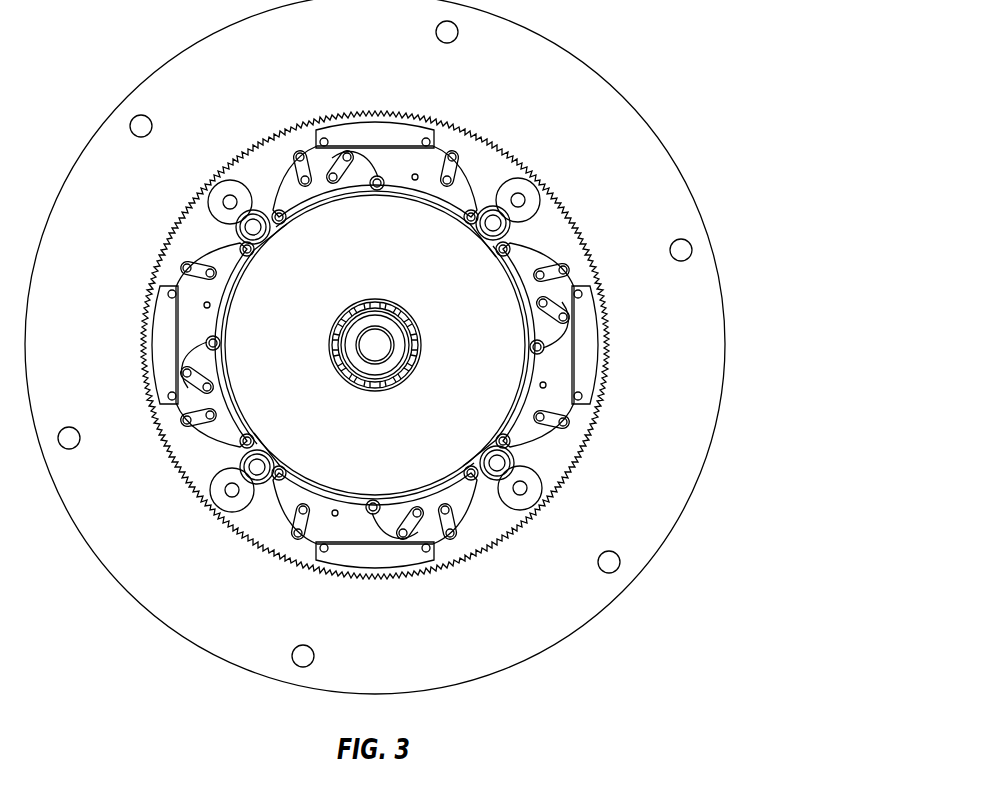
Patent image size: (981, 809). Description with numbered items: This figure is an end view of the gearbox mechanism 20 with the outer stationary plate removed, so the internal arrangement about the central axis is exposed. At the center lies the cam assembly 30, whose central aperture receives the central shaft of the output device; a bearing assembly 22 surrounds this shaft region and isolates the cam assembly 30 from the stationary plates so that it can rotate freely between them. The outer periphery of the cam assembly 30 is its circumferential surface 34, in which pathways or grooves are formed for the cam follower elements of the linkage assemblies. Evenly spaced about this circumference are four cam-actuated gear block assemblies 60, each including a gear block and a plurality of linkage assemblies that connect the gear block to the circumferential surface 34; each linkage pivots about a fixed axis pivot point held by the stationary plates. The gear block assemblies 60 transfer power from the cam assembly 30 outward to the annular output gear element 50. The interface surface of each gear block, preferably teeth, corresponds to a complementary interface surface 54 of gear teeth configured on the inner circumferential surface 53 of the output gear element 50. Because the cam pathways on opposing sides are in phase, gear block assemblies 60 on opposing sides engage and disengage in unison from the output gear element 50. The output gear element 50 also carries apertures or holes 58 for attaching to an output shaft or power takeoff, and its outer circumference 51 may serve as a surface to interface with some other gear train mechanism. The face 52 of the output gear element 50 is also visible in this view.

The gearbox mechanism 20 is at (419, 364).
The bearing assembly 22 is at (420, 334).
The cam assembly 30 is at (375, 345).
The circumferential surface 34 is at (235, 298).
The output gear element 50 is at (419, 364).
The outer circumference 51 is at (545, 38).
The housing face 52 is at (391, 347).
The inner circumferential surface 53 is at (590, 226).
The complementary interface surface 54 is at (402, 345).
The apertures or holes 58 is at (133, 120).
The cam-actuated gear block assembly 60 is at (380, 128).